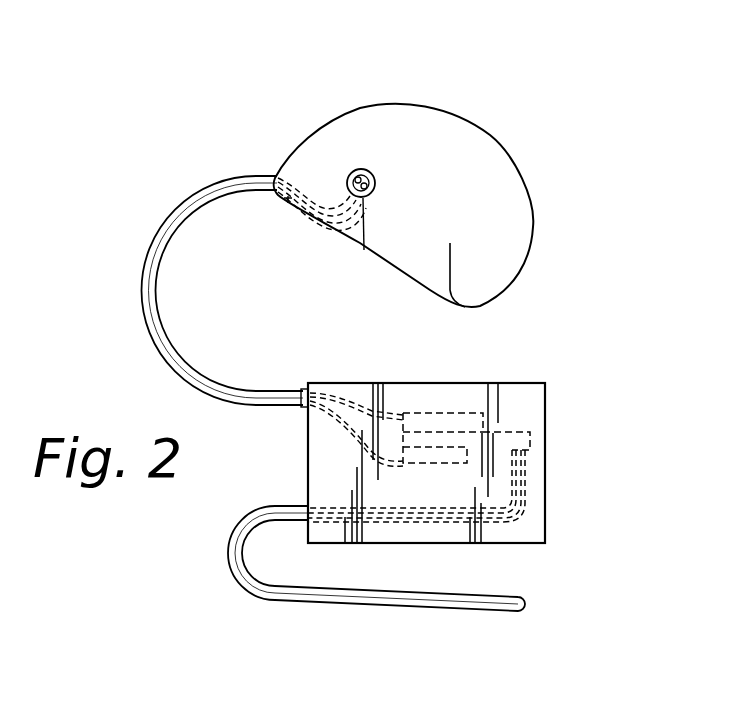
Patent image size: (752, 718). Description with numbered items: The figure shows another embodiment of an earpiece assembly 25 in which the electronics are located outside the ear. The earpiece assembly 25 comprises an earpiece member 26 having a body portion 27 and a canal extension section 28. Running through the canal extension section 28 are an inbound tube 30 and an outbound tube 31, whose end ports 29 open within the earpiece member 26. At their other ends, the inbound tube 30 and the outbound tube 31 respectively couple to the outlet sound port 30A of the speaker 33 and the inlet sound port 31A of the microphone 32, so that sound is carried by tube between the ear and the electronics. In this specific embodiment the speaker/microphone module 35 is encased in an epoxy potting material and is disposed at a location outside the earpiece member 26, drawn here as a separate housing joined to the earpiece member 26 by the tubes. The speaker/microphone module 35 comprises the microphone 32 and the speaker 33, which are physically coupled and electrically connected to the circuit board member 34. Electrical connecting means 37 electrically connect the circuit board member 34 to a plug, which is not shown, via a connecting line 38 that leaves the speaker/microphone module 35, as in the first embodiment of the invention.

The earpiece assembly 25 is at (582, 245).
The earpiece member 26 is at (369, 100).
The body portion 27 is at (483, 160).
The canal extension section 28 is at (362, 228).
The end ports 29 is at (370, 170).
The inbound tube 30 is at (296, 178).
The outbound tube 31 is at (287, 203).
The outlet sound port 30A is at (305, 390).
The inlet sound port 31A is at (303, 412).
The microphone 32 is at (437, 457).
The speaker 33 is at (462, 420).
The circuit board member 34 is at (423, 447).
The speaker/microphone module 35 is at (560, 404).
The electrical connecting means 37 is at (530, 477).
The connecting line 38 is at (229, 570).